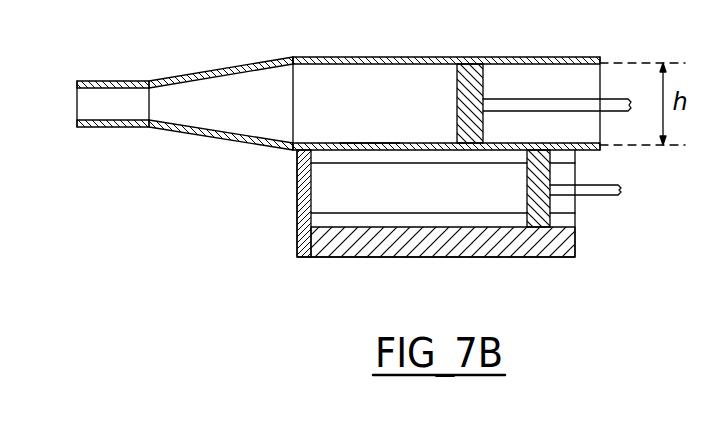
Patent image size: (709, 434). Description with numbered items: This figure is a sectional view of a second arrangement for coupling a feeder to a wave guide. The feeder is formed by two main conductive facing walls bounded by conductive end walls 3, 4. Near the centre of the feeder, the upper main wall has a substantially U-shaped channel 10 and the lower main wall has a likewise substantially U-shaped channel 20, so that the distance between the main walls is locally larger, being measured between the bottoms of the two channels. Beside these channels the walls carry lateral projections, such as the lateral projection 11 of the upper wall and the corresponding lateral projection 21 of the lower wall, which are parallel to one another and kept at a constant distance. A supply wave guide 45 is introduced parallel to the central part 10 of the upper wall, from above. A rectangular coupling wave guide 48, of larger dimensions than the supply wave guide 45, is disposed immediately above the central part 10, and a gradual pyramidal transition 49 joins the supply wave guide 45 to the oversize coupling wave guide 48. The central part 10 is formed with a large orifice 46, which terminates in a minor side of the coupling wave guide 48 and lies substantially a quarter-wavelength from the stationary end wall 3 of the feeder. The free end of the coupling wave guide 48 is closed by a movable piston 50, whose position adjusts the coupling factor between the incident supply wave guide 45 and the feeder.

The supply wave guide 45 is at (118, 82).
The gradual pyramidal transition 49 is at (225, 70).
The coupling wave guide 48 is at (325, 57).
The orifice 46 is at (362, 147).
The movable piston 50 is at (483, 77).
The conductive end wall 3 is at (296, 200).
The lateral projection 21 is at (295, 237).
The U-shaped channel 20 is at (360, 228).
The U-shaped channel 10 is at (312, 154).
The lateral projection 11 is at (316, 170).
The conductive end wall 4 is at (552, 173).